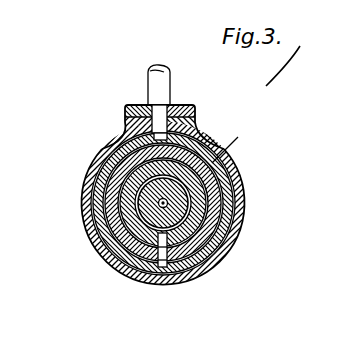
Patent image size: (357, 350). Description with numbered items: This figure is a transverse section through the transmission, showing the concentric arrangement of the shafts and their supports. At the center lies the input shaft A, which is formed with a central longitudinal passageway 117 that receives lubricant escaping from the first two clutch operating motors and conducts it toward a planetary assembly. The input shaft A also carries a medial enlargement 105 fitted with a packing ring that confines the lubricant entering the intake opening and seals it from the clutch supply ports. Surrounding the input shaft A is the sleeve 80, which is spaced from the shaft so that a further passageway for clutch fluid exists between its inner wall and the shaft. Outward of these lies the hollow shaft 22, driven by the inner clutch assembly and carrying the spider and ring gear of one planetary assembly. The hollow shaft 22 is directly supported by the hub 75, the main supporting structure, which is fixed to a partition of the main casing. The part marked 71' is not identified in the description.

The central longitudinal passageway 117 is at (106, 184).
The hollow shaft 22 is at (216, 224).
The medial enlargement 105 is at (96, 233).
The sleeve 80 is at (172, 185).
The hub 75 is at (168, 282).
The stem 71' is at (133, 102).
The input shaft A is at (233, 144).